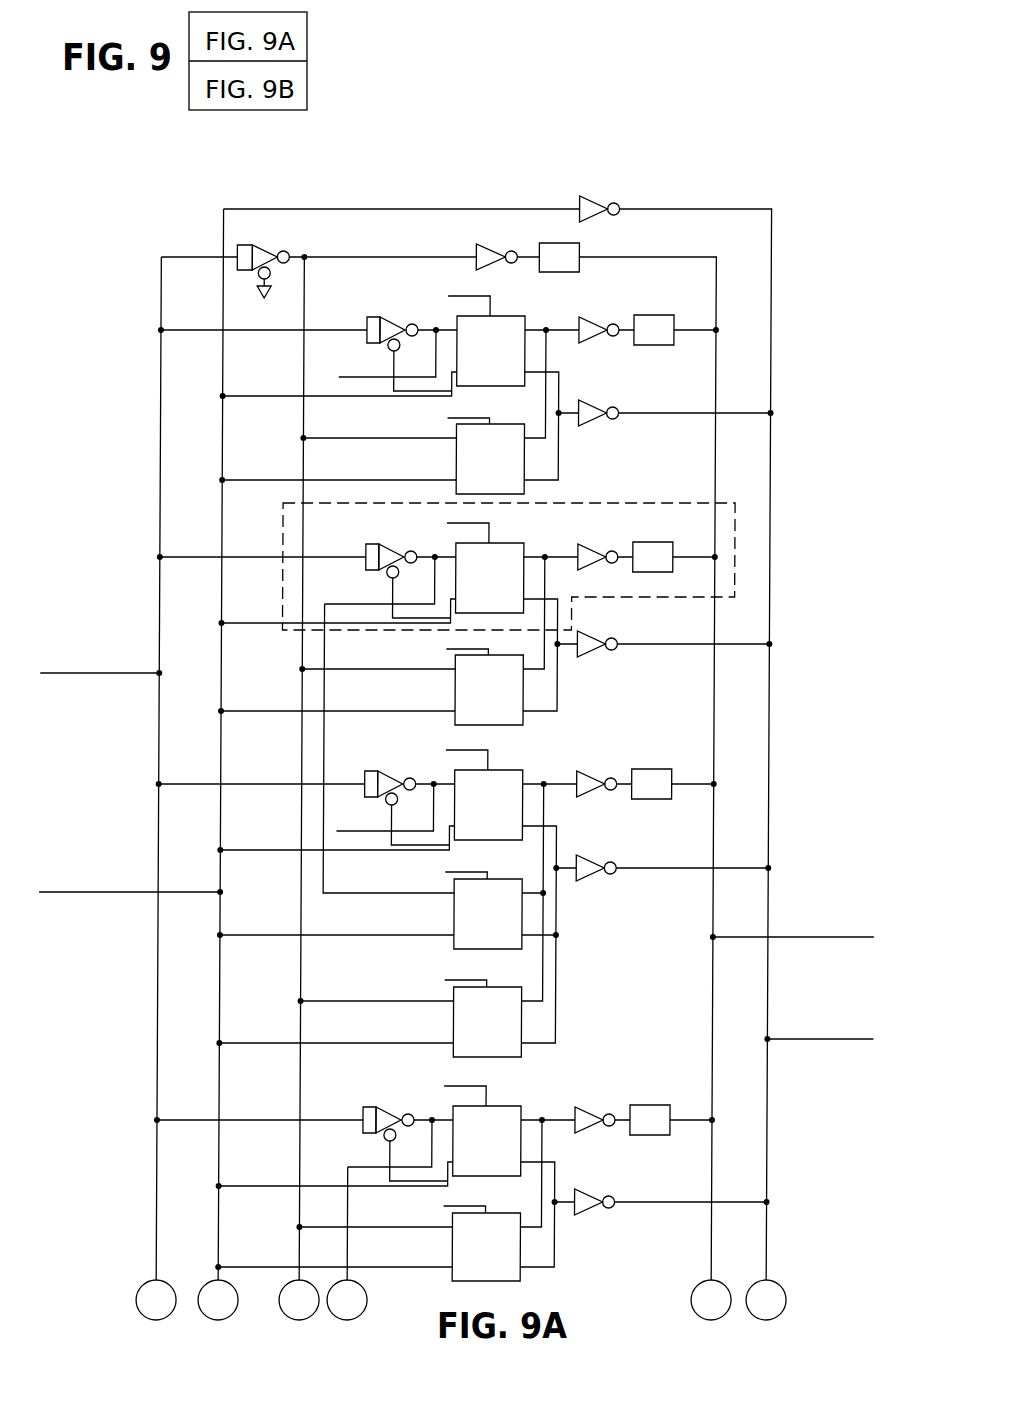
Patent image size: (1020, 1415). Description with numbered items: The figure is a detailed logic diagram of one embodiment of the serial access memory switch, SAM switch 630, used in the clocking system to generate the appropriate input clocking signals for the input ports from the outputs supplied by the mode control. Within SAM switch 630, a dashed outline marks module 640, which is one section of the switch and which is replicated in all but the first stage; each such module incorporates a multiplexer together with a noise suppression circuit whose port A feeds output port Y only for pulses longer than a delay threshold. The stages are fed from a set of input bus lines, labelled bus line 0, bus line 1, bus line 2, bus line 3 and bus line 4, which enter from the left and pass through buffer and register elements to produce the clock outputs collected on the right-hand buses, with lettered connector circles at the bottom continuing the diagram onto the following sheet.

The SAM switch 630 is at (675, 172).
The module 640 is at (648, 500).
The bus line 0 is at (199, 245).
The bus line 1 is at (264, 318).
The bus line 2 is at (263, 545).
The bus line 3 is at (262, 772).
The bus line 4 is at (260, 1108).